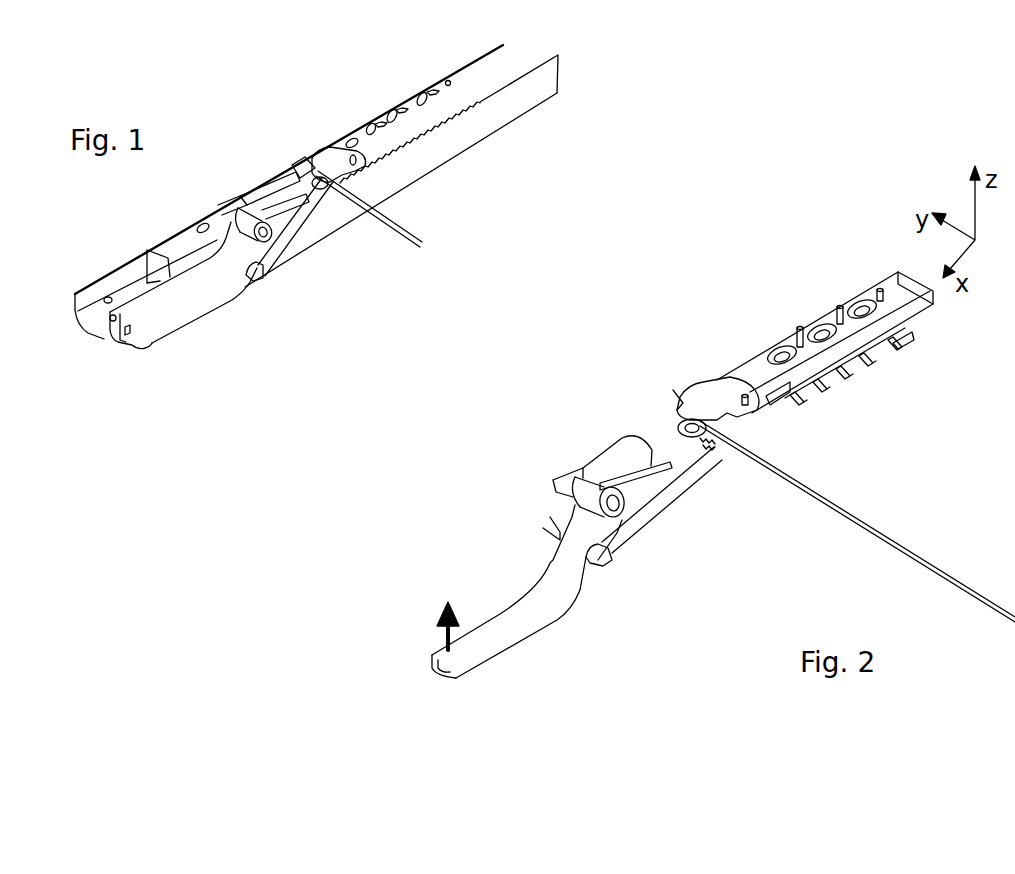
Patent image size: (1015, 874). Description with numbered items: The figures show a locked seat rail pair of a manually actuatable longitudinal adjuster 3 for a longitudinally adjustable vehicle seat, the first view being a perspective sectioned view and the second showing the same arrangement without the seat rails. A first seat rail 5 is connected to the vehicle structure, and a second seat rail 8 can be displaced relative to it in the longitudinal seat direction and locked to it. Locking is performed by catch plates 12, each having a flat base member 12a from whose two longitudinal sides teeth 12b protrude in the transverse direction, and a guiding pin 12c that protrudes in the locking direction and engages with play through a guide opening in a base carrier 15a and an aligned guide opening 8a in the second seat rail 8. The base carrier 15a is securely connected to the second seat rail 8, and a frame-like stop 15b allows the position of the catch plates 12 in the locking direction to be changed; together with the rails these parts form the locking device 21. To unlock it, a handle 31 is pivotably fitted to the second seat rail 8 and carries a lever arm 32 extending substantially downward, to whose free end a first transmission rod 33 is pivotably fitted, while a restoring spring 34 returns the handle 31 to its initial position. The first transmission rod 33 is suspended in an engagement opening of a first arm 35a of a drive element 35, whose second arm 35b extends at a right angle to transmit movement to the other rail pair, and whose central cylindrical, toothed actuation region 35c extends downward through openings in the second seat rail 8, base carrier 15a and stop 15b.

In FIG. 1, the longitudinal adjuster 3 is at (270, 141).
In FIG. 1, the first seat rail 5 is at (102, 332).
In FIG. 1, the second seat rail 8 is at (173, 248).
In FIG. 1, the guide opening 8a is at (389, 114).
In FIG. 2, the catch plate 12 is at (898, 339).
In FIG. 2, the base member 12a is at (887, 350).
In FIG. 2, the tooth 12b is at (877, 367).
In FIG. 1, the guiding pin 12c is at (422, 92).
In FIG. 2, the guiding pin 12c is at (795, 327).
In FIG. 2, the base carrier 15a is at (867, 290).
In FIG. 2, the frame-like stop 15b is at (778, 392).
In FIG. 1, the locking device 21 is at (377, 235).
In FIG. 2, the locking device 21 is at (903, 451).
In FIG. 1, the handle 31 is at (180, 330).
In FIG. 2, the handle 31 is at (527, 620).
In FIG. 1, the lever arm 32 is at (251, 285).
In FIG. 2, the lever arm 32 is at (598, 572).
In FIG. 1, the first transmission rod 33 is at (308, 218).
In FIG. 2, the first transmission rod 33 is at (679, 488).
In FIG. 1, the restoring spring 34 is at (227, 223).
In FIG. 2, the restoring spring 34 is at (562, 503).
In FIG. 2, the drive element 35 is at (708, 408).
In FIG. 2, the first arm 35a is at (750, 393).
In FIG. 2, the second arm 35b is at (682, 425).
In FIG. 2, the actuation region 35c is at (703, 437).